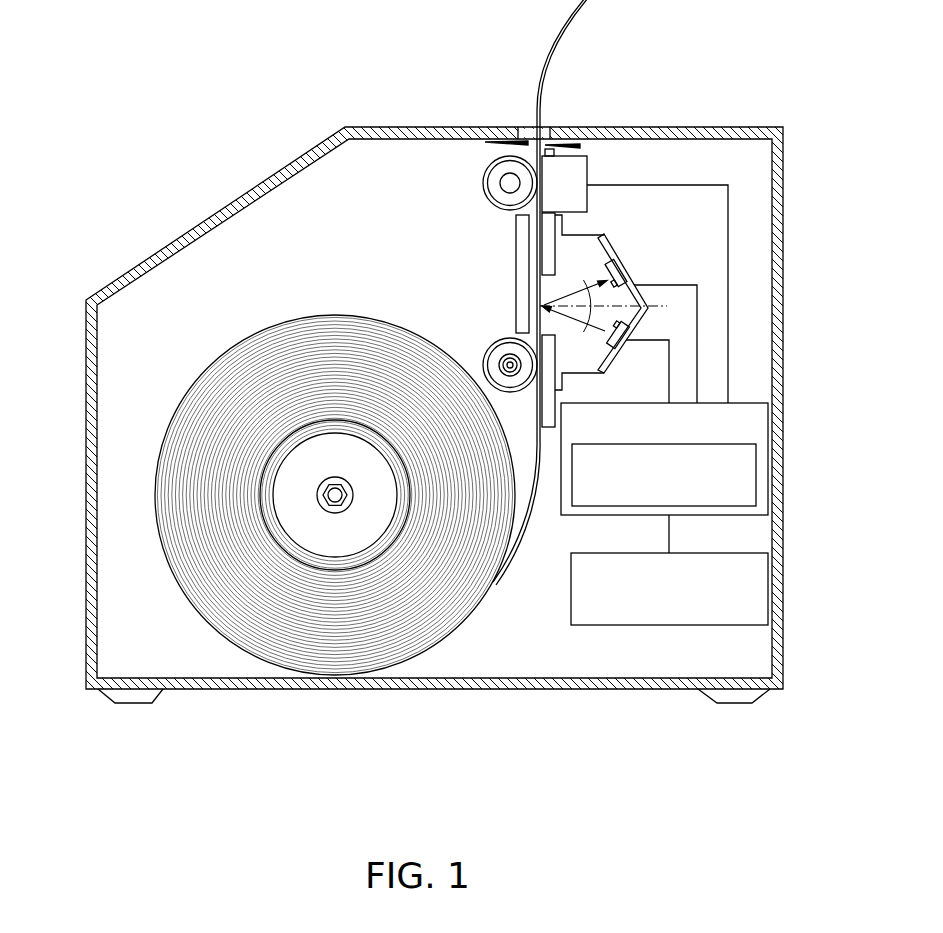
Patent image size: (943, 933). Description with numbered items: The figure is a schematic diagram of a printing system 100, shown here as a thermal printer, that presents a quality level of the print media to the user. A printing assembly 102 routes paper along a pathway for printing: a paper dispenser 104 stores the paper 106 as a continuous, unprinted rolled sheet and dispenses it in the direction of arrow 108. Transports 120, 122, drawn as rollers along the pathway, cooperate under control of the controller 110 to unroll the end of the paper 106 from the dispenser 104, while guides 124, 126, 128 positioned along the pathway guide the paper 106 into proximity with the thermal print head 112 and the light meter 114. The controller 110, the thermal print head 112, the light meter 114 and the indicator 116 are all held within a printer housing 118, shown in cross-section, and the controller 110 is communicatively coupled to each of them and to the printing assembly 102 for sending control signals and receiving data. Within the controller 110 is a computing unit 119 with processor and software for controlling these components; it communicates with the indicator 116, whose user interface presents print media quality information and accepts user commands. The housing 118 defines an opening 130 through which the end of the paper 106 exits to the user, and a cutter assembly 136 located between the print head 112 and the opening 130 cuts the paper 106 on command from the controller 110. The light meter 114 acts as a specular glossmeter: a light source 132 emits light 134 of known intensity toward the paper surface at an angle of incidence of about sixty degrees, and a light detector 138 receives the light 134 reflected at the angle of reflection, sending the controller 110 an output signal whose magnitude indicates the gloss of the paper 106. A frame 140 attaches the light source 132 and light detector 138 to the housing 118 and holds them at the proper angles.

The printing system 100 is at (183, 156).
The printing assembly 102 is at (474, 218).
The paper dispenser 104 is at (466, 636).
The paper 106 is at (246, 338).
The arrow 108 is at (534, 530).
The controller 110 is at (760, 434).
The thermal print head 112 is at (587, 180).
The light meter 114 is at (636, 262).
The indicator 116 is at (688, 617).
The printer housing 118 is at (318, 143).
The computing unit 119 is at (682, 498).
The transport 120 is at (491, 346).
The transport 122 is at (484, 178).
The guide 124 is at (548, 428).
The guide 126 is at (516, 268).
The guide 128 is at (557, 253).
The opening 130 is at (524, 108).
The light source 132 is at (641, 314).
The light 134 is at (600, 262).
The cutter assembly 136 is at (594, 148).
The light detector 138 is at (624, 291).
The frame 140 is at (645, 320).